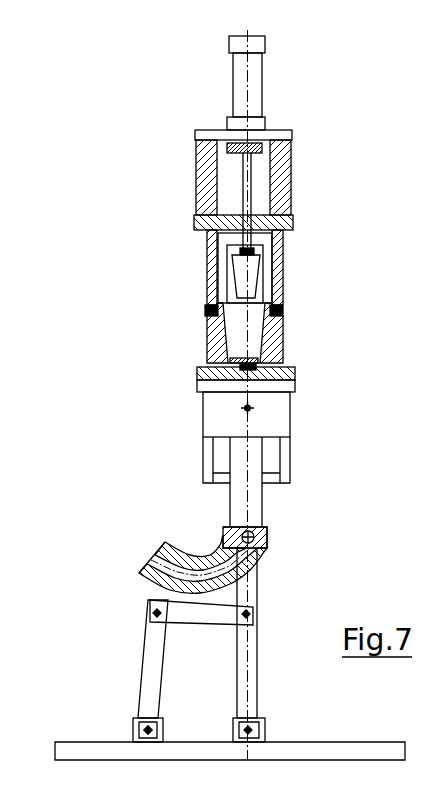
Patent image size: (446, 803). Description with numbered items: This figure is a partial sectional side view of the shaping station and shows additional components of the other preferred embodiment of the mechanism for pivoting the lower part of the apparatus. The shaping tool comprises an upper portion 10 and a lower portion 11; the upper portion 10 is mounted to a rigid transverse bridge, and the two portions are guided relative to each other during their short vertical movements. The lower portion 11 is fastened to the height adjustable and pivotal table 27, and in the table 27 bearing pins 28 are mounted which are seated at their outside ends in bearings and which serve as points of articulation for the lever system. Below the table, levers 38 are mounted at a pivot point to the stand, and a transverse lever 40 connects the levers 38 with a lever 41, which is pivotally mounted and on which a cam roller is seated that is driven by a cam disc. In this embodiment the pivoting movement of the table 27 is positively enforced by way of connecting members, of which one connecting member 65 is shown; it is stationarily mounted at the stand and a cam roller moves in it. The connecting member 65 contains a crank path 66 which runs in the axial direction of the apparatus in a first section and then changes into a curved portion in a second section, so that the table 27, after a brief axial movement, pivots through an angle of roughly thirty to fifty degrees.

The upper portion 10 is at (197, 263).
The lower portion 11 is at (197, 325).
The table 27 is at (208, 388).
The bearing pins 28 is at (244, 408).
The connecting member 65 is at (155, 572).
The crank path 66 is at (172, 545).
The transverse lever 40 is at (188, 618).
The lever 41 is at (153, 668).
The levers 38 is at (245, 690).